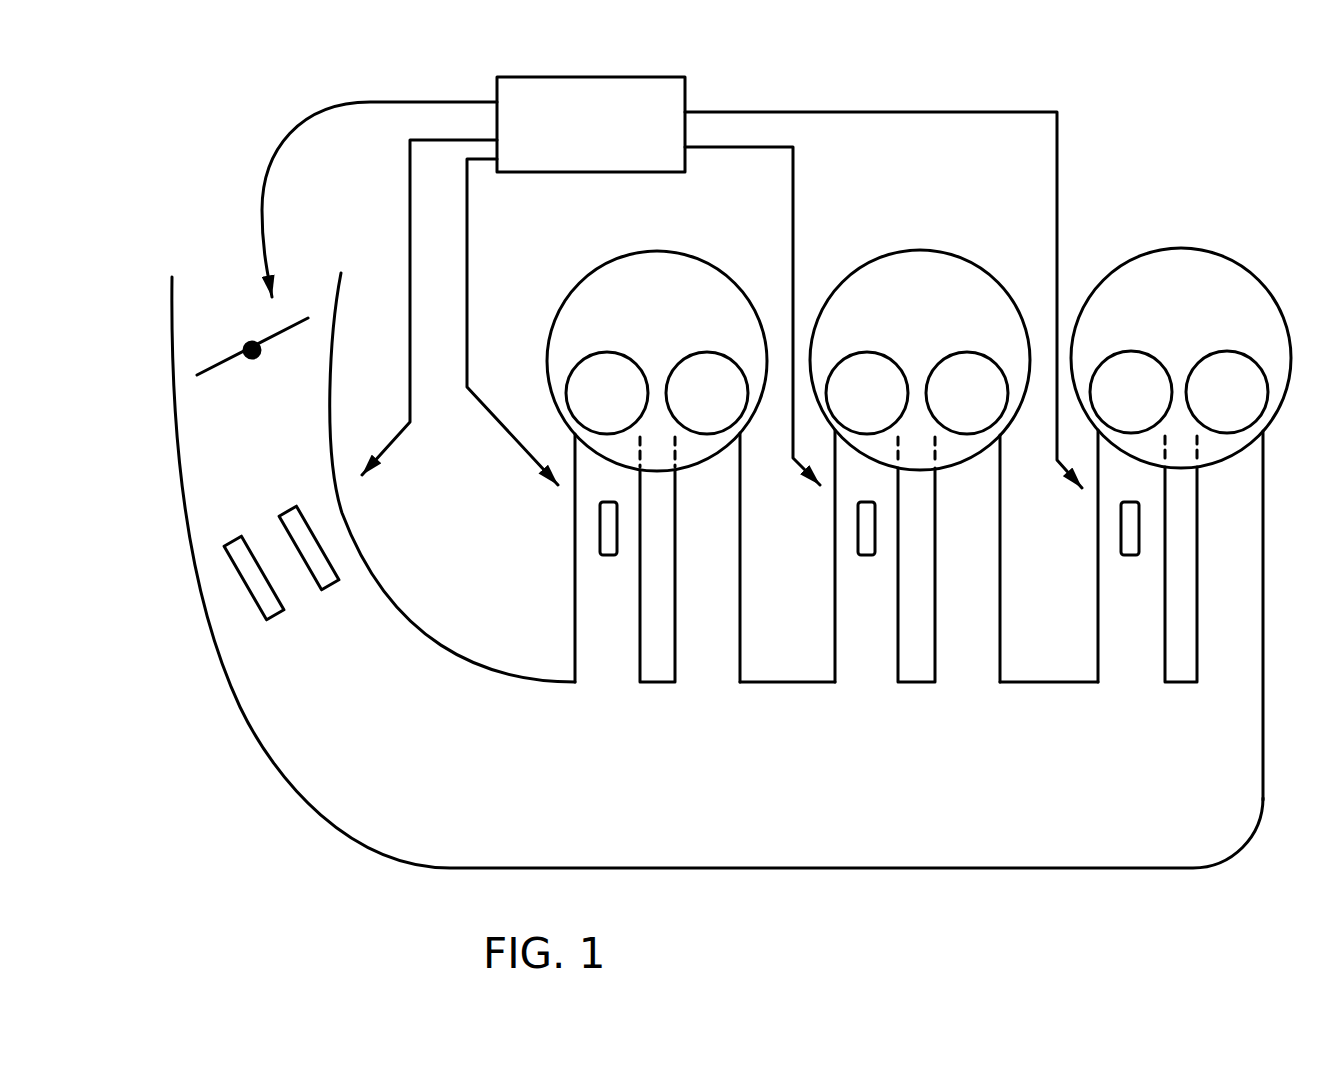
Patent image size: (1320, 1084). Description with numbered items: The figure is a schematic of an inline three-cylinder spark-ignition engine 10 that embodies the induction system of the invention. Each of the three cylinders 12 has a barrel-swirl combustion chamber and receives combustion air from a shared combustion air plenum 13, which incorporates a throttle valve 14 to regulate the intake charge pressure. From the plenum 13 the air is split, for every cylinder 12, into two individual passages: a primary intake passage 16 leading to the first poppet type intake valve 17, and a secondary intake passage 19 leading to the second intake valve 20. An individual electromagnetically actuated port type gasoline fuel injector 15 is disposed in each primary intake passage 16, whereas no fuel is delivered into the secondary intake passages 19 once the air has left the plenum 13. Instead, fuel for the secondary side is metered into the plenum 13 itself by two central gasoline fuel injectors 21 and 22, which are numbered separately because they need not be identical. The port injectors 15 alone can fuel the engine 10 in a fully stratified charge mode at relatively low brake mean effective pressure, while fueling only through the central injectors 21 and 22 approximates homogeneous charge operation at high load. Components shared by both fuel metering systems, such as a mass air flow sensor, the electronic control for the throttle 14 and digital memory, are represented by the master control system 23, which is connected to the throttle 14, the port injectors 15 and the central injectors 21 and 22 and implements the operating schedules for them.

The engine 10 is at (290, 835).
The cylinder 12 is at (587, 277).
The combustion air plenum 13 is at (817, 785).
The throttle valve 14 is at (209, 371).
The port fuel injector 15 is at (608, 556).
The primary intake passage 16 is at (575, 645).
The first intake valve 17 is at (612, 352).
The secondary intake passage 19 is at (740, 553).
The second intake valve 20 is at (706, 352).
The central gasoline fuel injector 21 is at (236, 538).
The central gasoline fuel injector 22 is at (286, 506).
The master control system 23 is at (617, 173).